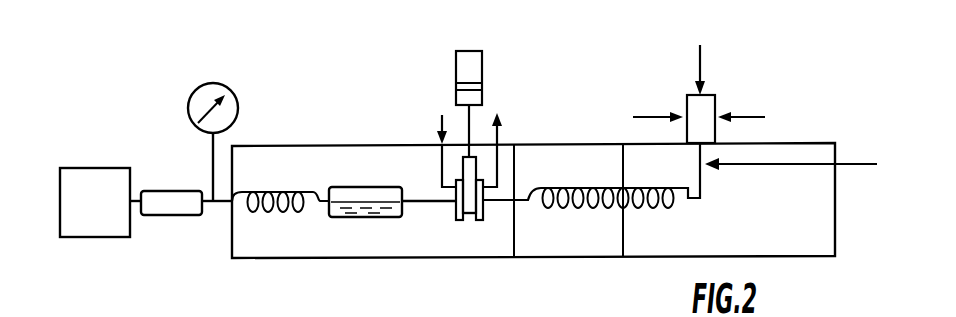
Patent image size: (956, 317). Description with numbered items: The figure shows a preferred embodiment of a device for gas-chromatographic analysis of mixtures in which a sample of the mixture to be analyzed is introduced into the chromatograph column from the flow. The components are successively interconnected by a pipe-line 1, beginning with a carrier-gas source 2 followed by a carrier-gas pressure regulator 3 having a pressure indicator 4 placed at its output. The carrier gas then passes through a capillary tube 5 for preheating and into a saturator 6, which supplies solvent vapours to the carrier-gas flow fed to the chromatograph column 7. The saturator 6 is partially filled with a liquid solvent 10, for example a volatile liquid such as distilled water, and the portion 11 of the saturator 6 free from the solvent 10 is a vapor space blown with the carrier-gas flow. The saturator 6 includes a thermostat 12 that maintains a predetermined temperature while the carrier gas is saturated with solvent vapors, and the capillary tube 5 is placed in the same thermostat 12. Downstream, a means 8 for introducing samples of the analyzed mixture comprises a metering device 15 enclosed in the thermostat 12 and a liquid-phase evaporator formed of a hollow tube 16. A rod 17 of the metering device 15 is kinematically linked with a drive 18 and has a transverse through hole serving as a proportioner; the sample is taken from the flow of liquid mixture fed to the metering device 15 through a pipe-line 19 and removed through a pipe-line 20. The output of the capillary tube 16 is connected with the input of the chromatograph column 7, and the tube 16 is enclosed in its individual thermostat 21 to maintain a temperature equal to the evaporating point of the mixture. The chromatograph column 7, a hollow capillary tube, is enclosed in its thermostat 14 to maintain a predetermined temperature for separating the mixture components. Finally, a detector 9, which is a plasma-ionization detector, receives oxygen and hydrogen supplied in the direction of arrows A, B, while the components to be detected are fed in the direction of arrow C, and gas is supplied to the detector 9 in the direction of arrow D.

The pipe-line 1 is at (137, 193).
The carrier-gas source 2 is at (95, 202).
The carrier-gas pressure regulator 3 is at (163, 193).
The pressure indicator 4 is at (235, 92).
The capillary tube 5 is at (262, 190).
The saturator 6 is at (338, 187).
The chromatograph column 7 is at (662, 210).
The means for introducing samples 8 is at (479, 268).
The detector 9 is at (687, 97).
The liquid solvent 10 is at (393, 208).
The portion of the saturator 11 is at (370, 195).
The thermostat 12 is at (326, 237).
The thermostat 14 is at (797, 227).
The metering device 15 is at (483, 212).
The hollow tube 16 is at (557, 187).
The rod 17 is at (502, 157).
The drive 18 is at (485, 58).
The pipe-line 19 is at (440, 145).
The pipe-line 20 is at (470, 170).
The thermostat 21 is at (602, 155).
The arrow A is at (658, 100).
The arrow B is at (741, 99).
The arrow C is at (712, 70).
The arrow D is at (791, 145).